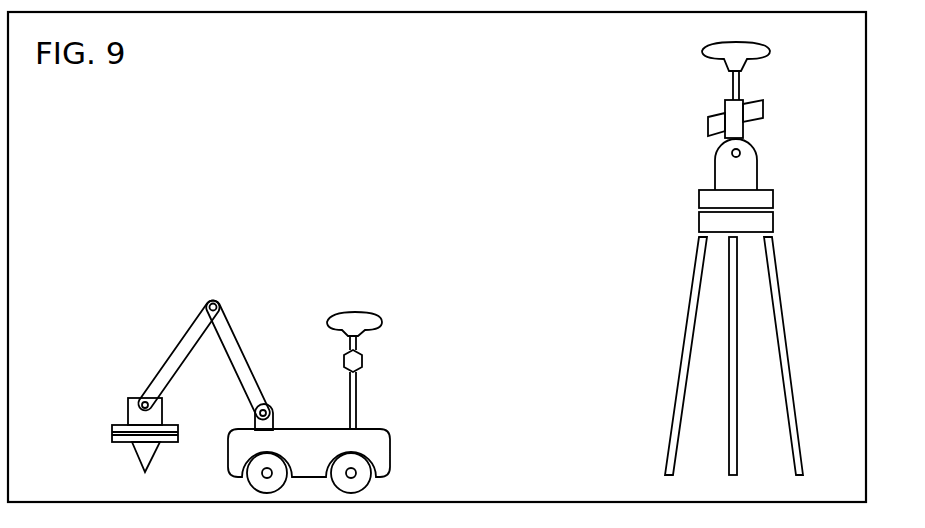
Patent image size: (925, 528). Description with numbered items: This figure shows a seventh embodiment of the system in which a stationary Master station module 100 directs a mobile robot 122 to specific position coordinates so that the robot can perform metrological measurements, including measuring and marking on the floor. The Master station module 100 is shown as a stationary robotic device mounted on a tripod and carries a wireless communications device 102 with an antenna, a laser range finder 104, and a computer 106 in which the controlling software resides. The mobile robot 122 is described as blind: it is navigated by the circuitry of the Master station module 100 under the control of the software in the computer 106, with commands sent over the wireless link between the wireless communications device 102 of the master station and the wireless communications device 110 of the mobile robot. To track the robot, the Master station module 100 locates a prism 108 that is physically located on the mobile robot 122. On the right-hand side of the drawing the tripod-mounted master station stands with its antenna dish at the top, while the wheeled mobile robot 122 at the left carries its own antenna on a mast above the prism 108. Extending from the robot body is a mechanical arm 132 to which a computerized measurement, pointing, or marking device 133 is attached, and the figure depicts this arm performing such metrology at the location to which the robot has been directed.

The Master station module 100 is at (623, 154).
The wireless communications device 102 is at (769, 71).
The laser range finder 104 is at (772, 116).
The computer 106 is at (772, 164).
The prism 108 is at (393, 382).
The wireless communications device 110 is at (387, 317).
The mobile robot 122 is at (357, 452).
The mechanical arm 132 is at (226, 362).
The computerized measurement, pointing, or marking device 133 is at (169, 435).